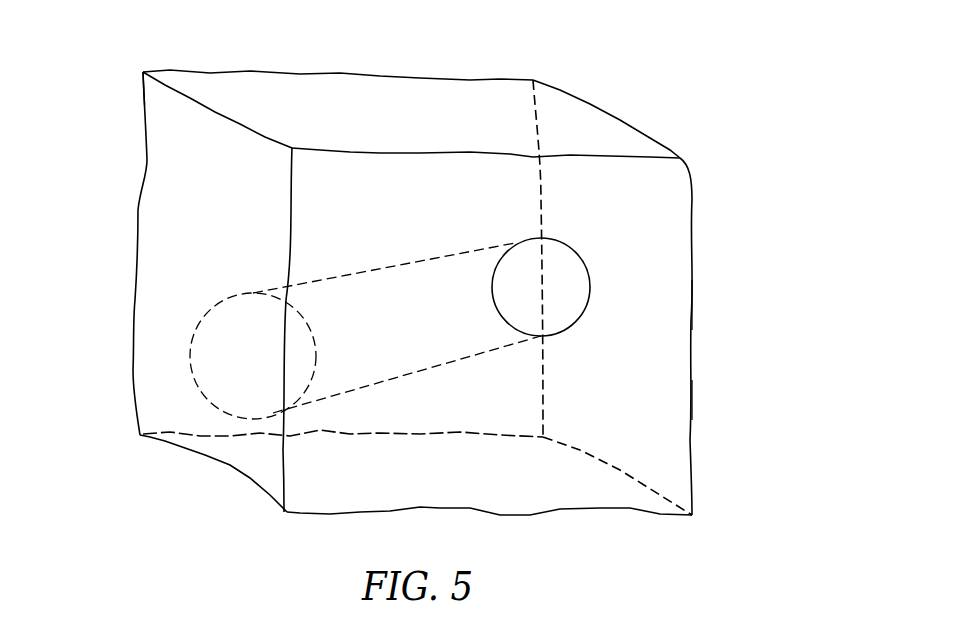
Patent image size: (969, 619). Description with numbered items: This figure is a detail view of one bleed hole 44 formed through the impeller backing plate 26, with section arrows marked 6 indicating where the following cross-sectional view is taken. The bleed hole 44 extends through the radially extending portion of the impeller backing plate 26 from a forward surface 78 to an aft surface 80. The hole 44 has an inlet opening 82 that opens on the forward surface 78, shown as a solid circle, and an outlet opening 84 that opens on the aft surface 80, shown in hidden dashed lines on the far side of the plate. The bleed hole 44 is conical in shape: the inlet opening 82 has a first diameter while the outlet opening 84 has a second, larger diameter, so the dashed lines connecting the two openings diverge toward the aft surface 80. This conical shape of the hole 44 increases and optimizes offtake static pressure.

The impeller backing plate 26 is at (777, 148).
The aft surface 80 is at (180, 215).
The inlet opening 82 is at (552, 268).
The outlet opening 84 is at (232, 365).
The bleed hole 44 is at (600, 300).
The forward surface 78 is at (655, 393).
The section line 6- 6 is at (668, 247).